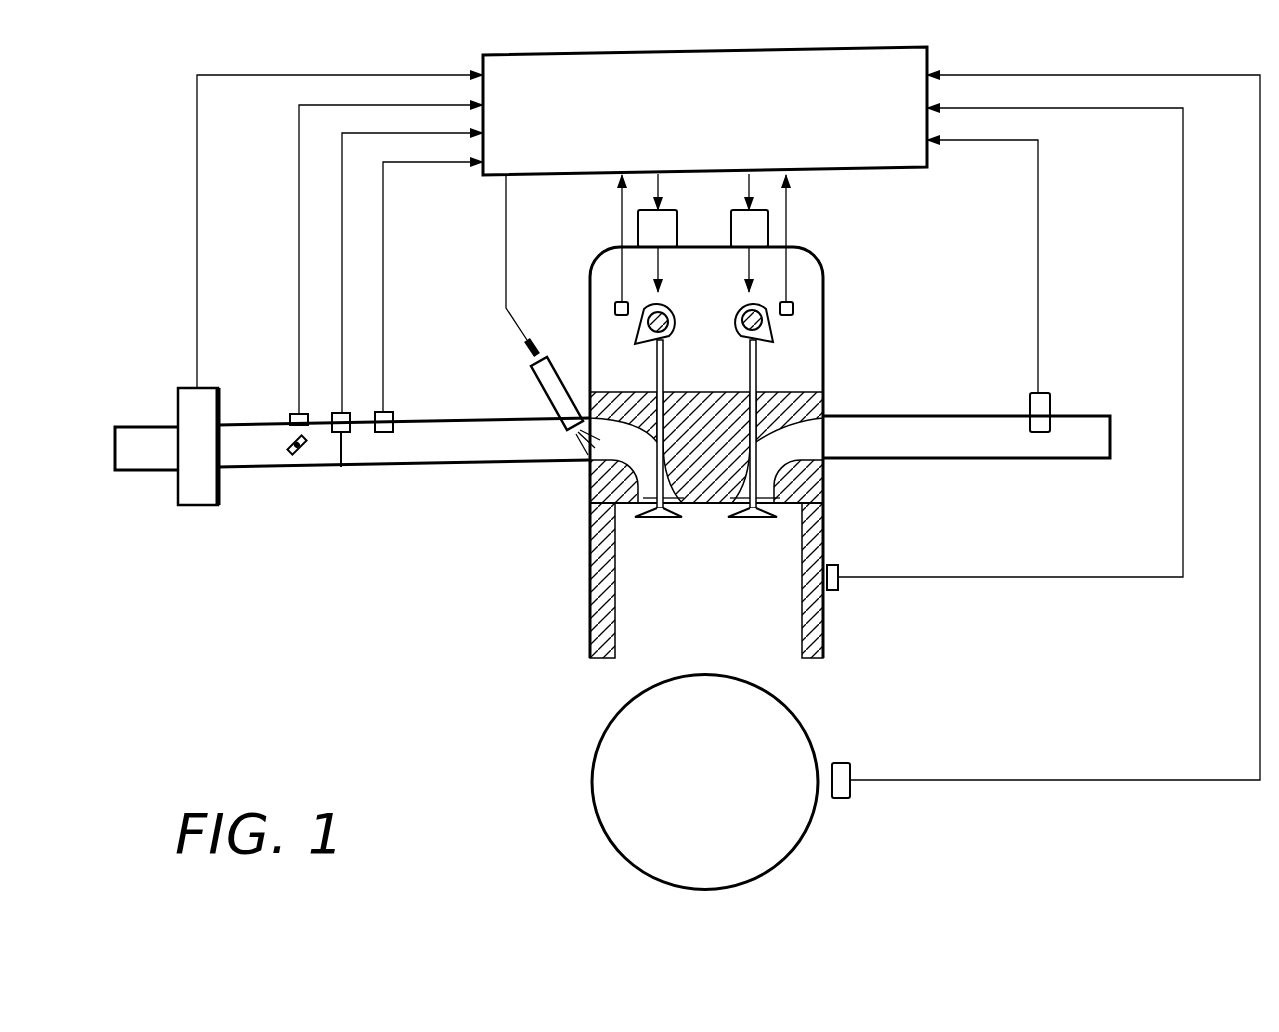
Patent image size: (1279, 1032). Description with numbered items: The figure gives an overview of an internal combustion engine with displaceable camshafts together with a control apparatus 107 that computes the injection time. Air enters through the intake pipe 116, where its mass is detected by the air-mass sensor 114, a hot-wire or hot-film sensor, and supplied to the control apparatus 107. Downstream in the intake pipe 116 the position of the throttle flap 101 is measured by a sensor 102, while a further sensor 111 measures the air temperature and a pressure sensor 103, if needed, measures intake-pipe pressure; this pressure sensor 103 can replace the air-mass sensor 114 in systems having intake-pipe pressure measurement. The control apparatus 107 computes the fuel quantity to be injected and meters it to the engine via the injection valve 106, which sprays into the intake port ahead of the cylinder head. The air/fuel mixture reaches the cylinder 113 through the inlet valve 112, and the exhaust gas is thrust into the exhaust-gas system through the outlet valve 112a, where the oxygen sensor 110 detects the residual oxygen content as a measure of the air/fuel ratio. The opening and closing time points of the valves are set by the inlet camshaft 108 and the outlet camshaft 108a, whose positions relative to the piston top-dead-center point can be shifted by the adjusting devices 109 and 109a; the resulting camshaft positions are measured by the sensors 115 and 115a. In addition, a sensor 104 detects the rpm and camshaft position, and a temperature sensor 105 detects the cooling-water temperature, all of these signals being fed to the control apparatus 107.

The throttle flap 101 is at (292, 453).
The sensor 102 is at (290, 420).
The pressure sensor 103 is at (342, 468).
The sensor 104 is at (848, 770).
The temperature sensor 105 is at (840, 592).
The injection valve 106 is at (545, 384).
The control apparatus 107 is at (667, 138).
The inlet camshaft 108 is at (672, 334).
The outlet camshaft 108a is at (773, 334).
The adjusting device 109 is at (640, 225).
The adjusting device 109a is at (768, 225).
The oxygen sensor 110 is at (1042, 410).
The sensor 111 is at (390, 422).
The inlet valve 112 is at (661, 522).
The outlet valve 112a is at (753, 522).
The cylinder 113 is at (682, 647).
The air-mass sensor 114 is at (200, 507).
The sensor 115 is at (615, 306).
The sensor 115a is at (793, 306).
The intake pipe 116 is at (479, 447).